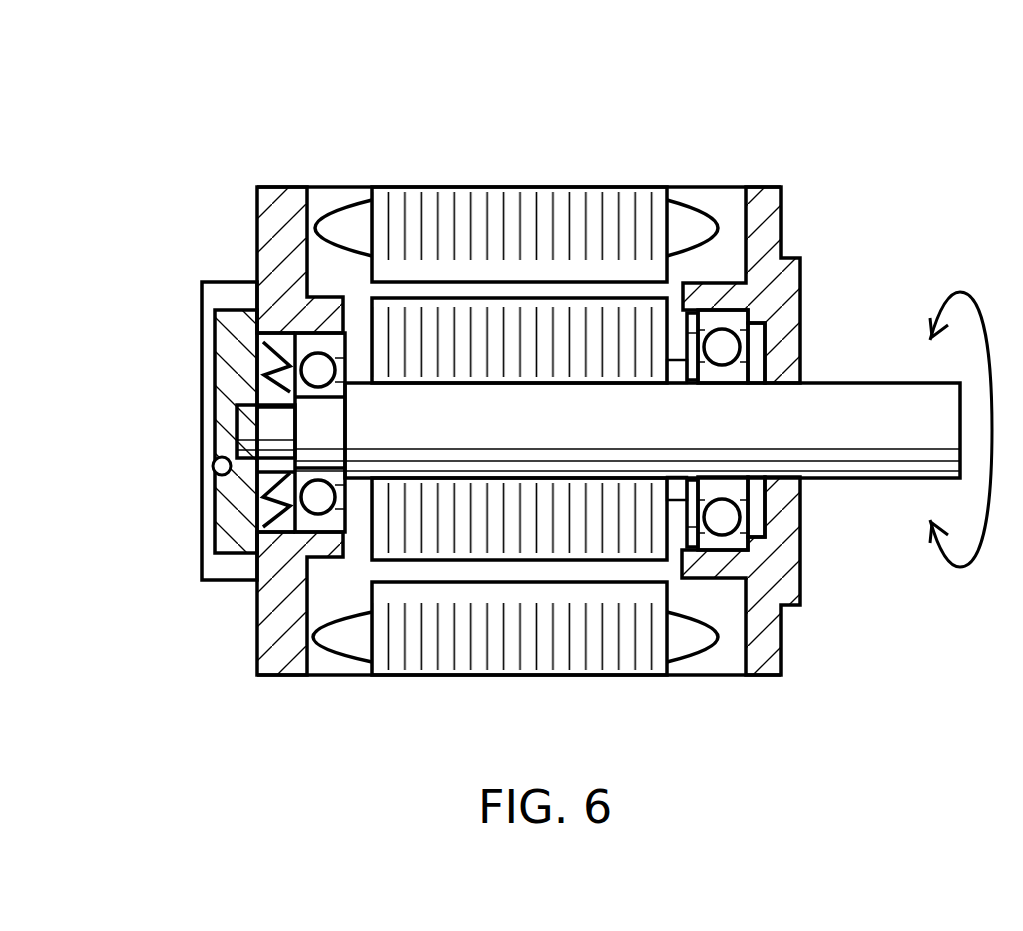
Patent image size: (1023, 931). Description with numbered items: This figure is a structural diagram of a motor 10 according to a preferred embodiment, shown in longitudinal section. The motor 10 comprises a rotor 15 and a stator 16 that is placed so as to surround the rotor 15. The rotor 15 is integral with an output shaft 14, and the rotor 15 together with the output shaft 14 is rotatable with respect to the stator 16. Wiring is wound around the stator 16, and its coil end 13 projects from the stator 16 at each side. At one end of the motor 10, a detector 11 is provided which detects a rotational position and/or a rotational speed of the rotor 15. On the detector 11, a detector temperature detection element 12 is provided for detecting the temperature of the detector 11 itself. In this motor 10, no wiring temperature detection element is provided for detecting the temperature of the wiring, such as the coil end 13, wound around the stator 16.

The motor 10 is at (769, 168).
The detector 11 is at (226, 318).
The detector temperature detection element 12 is at (214, 468).
The coil end 13 is at (352, 638).
The output shaft 14 is at (866, 448).
The rotor 15 is at (609, 318).
The stator 16 is at (544, 209).